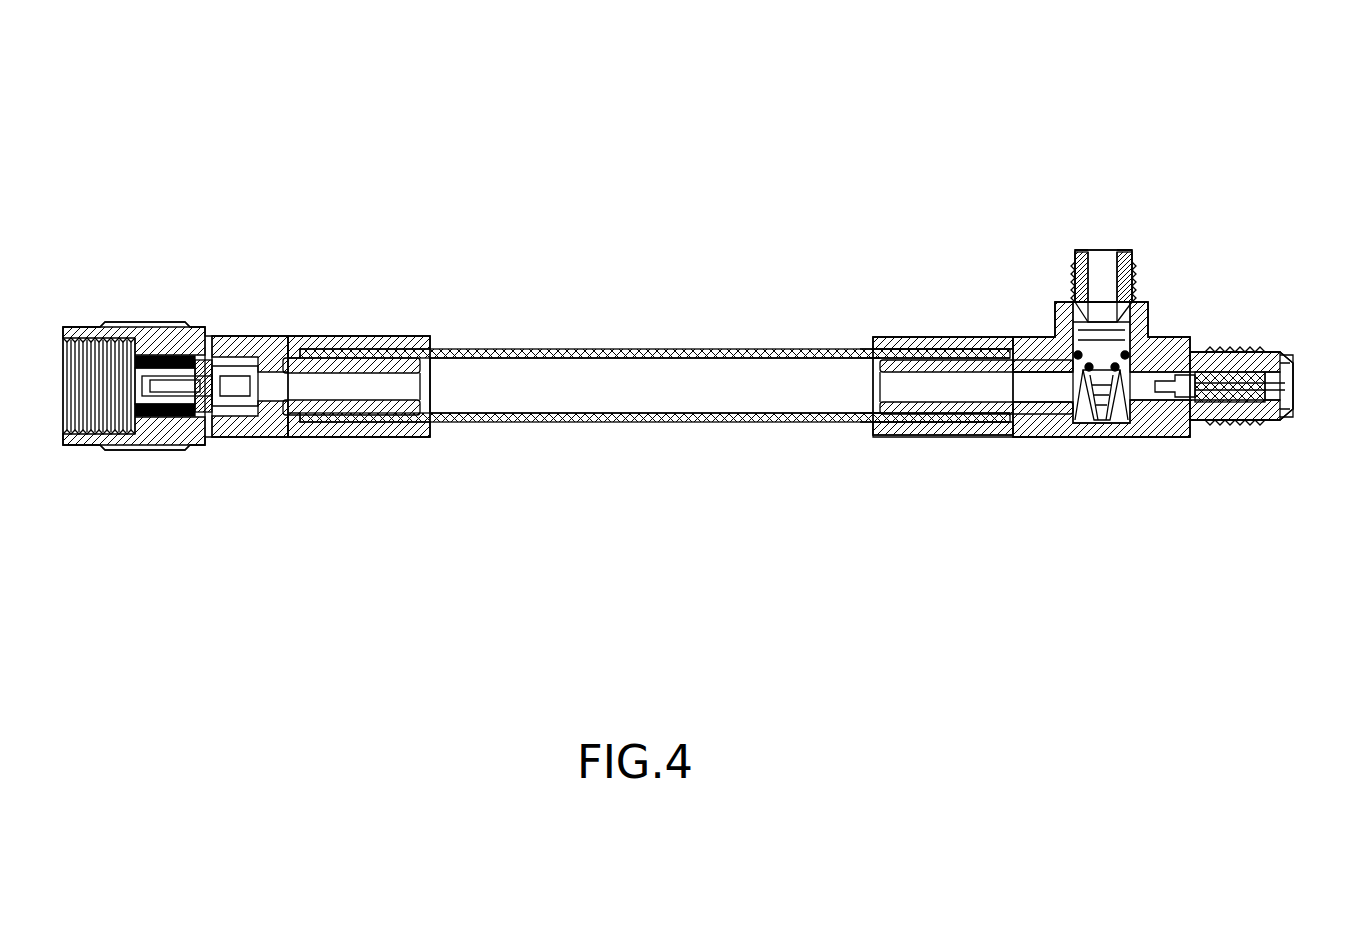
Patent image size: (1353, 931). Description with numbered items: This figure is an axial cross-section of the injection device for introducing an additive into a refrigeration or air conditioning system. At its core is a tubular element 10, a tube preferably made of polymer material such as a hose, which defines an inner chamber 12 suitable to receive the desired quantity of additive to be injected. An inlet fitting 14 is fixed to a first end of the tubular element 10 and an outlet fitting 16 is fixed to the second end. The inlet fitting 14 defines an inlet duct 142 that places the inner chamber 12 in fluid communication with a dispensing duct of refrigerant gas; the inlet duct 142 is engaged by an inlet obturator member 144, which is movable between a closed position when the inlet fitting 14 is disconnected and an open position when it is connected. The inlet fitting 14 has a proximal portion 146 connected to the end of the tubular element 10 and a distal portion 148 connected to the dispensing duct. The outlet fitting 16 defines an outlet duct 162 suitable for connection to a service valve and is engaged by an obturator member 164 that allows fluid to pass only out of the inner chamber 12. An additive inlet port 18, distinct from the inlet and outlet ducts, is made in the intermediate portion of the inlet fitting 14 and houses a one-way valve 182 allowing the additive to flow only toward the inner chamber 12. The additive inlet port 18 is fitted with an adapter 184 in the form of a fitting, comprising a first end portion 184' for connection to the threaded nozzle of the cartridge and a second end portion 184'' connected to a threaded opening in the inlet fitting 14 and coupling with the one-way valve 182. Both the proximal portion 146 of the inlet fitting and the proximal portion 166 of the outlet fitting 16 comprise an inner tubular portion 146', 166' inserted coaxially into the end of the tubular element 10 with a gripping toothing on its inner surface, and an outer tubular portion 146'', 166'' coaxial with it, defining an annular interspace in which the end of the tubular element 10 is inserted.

The tubular element 10 is at (685, 349).
The inner chamber 12 is at (606, 388).
The inlet fitting 14 is at (1100, 470).
The outlet fitting 16 is at (236, 472).
The additive inlet port 18 is at (1089, 222).
The inlet duct 142 is at (1030, 437).
The inlet obturator member 144 is at (1205, 345).
The proximal portion of the inlet fitting 146 is at (936, 316).
The inner tubular portion 146' is at (976, 474).
The outer tubular portion 146'' is at (957, 473).
The distal portion of the inlet fitting 148 is at (1262, 345).
The outlet duct 162 is at (327, 437).
The obturator member 164 is at (150, 322).
The proximal portion of the outlet fitting 166 is at (359, 306).
The inner tubular portion 166' is at (380, 288).
The outer tubular portion 166'' is at (382, 499).
The one-way valve 182 is at (1163, 437).
The adapter 184 is at (1076, 214).
The first end portion 184' is at (1149, 273).
The second end portion 184'' is at (1002, 206).